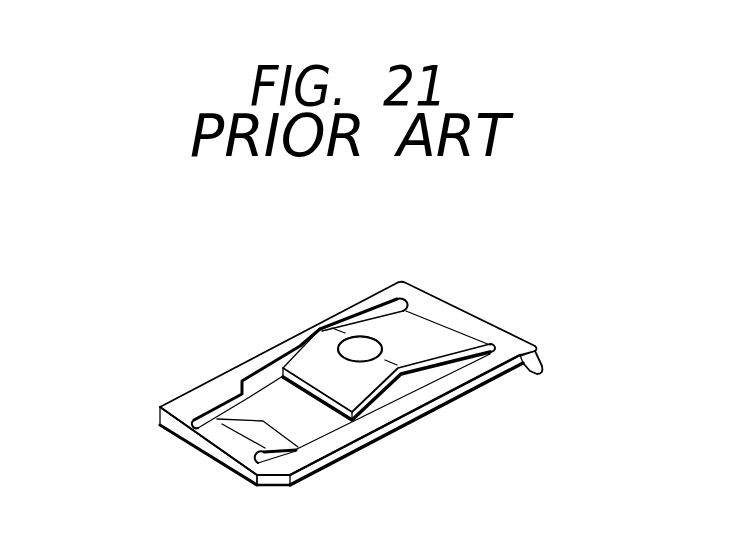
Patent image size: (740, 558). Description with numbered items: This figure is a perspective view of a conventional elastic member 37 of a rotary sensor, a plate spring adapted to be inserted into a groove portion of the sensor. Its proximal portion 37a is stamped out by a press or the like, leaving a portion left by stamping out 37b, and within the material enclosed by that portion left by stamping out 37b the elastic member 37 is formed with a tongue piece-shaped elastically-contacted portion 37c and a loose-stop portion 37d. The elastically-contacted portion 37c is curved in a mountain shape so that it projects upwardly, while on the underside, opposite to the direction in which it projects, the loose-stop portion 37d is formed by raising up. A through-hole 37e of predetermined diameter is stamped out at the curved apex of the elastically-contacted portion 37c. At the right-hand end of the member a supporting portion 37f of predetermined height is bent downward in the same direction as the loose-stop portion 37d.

The elastic member 37 is at (152, 338).
The proximal portion 37a is at (200, 390).
The portion left by stamping out 37b is at (267, 397).
The elastically-contacted portion 37c is at (320, 357).
The loose-stop portion 37d is at (275, 428).
The through-hole 37e is at (360, 345).
The supporting portion 37f is at (543, 363).